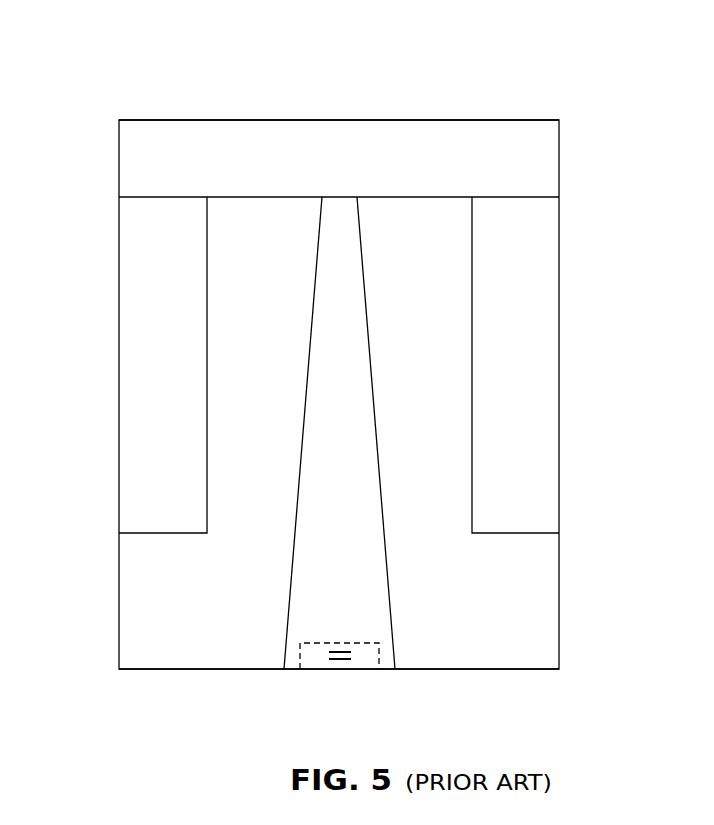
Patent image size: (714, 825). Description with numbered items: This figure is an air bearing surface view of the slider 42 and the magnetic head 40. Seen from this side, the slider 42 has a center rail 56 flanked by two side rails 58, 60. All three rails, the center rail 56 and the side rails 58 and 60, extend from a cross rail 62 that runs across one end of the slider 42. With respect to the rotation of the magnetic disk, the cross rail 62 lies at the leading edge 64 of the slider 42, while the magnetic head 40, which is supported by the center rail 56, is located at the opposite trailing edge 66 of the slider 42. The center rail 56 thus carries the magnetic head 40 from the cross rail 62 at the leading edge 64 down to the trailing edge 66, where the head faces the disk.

The slider 42 is at (119, 620).
The cross rail 62 is at (260, 133).
The leading edge 64 is at (438, 120).
The side rail 58 is at (133, 277).
The side rail 60 is at (542, 278).
The center rail 56 is at (324, 310).
The magnetic head 40 is at (318, 660).
The trailing edge 66 is at (461, 672).